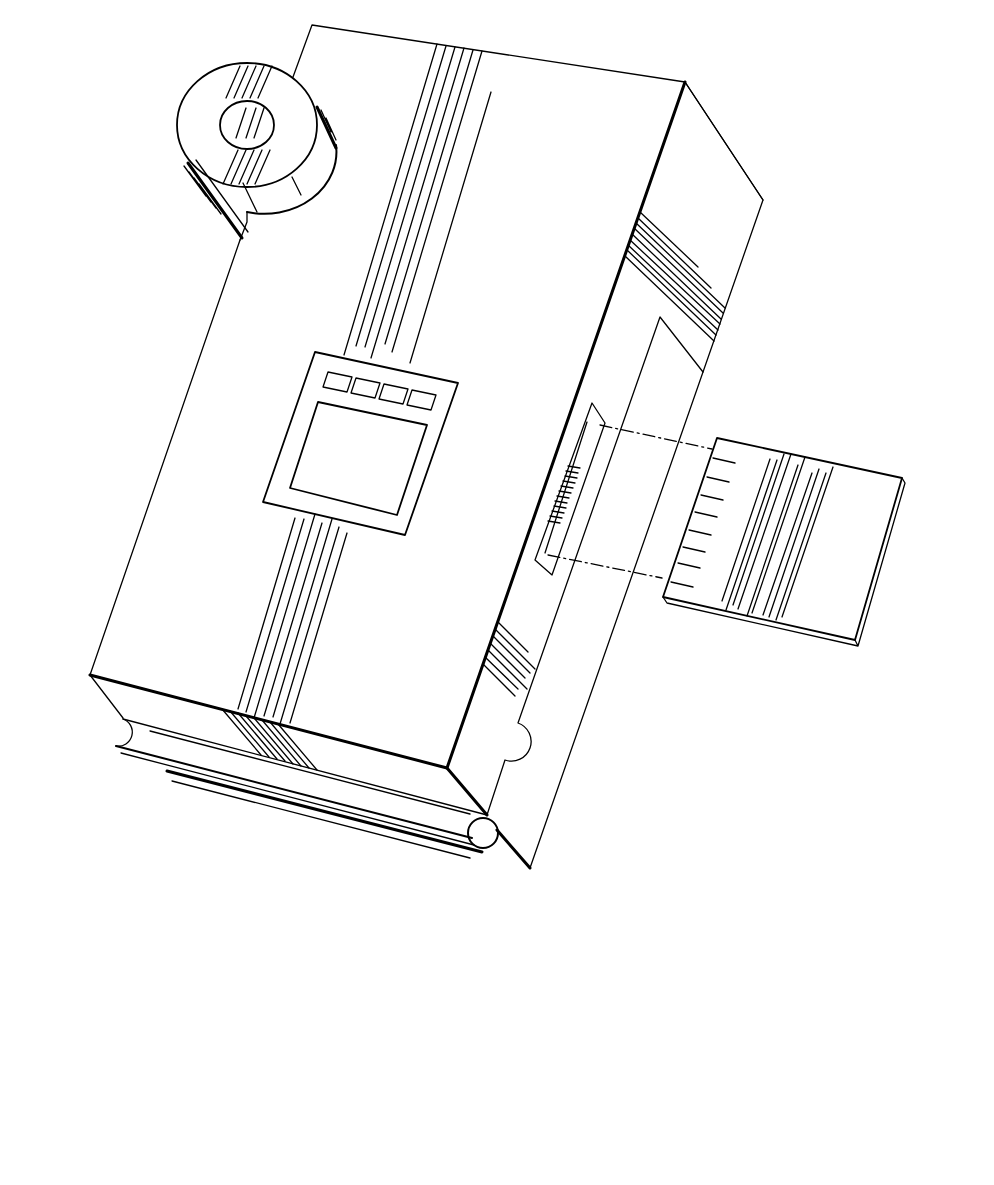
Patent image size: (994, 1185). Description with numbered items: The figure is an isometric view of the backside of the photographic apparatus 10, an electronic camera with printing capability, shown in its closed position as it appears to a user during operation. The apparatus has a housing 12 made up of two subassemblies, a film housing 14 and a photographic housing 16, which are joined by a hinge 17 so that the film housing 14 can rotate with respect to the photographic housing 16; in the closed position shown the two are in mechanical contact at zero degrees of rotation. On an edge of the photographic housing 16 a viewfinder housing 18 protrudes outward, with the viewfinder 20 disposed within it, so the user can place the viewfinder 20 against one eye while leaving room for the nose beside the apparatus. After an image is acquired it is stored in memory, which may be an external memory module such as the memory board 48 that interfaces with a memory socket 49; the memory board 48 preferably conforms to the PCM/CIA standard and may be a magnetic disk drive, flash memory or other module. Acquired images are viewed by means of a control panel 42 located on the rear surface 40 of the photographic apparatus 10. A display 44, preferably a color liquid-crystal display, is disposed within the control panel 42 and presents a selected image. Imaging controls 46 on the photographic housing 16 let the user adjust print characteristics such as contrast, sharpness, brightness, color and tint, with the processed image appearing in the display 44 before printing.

The photographic apparatus 10 is at (167, 318).
The housing 12 is at (206, 318).
The film housing 14 is at (532, 800).
The photographic housing 16 is at (762, 200).
The hinge 17 is at (490, 846).
The viewfinder housing 18 is at (193, 138).
The viewfinder 20 is at (243, 113).
The rear surface 40 is at (525, 97).
The control panel 42 is at (421, 365).
The display 44 is at (385, 482).
The imaging controls 46 is at (432, 388).
The memory board 48 is at (847, 500).
The memory socket 49 is at (582, 458).